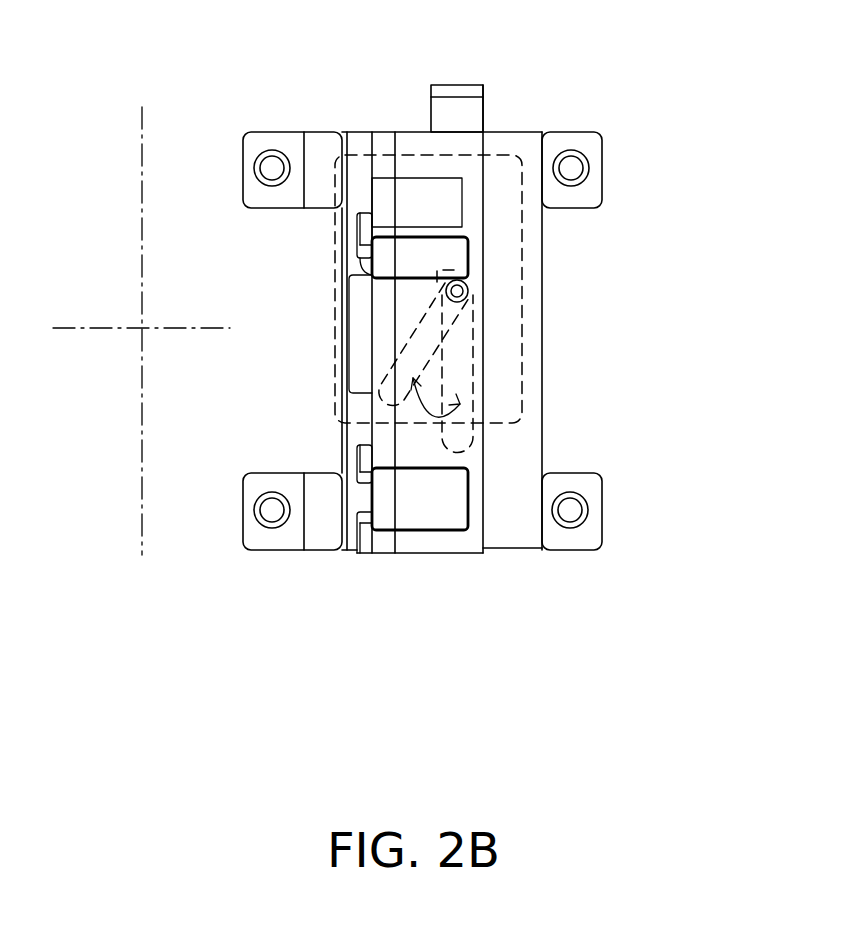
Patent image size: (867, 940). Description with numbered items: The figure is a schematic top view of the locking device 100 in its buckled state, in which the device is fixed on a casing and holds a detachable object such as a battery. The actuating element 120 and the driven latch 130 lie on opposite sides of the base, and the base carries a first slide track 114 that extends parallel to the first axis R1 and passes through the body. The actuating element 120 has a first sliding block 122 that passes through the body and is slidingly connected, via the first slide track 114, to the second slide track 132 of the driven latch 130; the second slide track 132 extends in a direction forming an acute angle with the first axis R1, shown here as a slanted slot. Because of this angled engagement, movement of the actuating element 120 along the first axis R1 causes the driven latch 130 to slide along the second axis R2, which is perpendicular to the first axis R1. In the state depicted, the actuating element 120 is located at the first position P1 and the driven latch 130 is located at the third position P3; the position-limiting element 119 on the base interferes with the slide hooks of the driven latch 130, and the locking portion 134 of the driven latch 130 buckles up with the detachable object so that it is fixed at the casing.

The locking device 100 is at (369, 350).
The first slide track 114 is at (462, 400).
The position-limiting element 119 is at (347, 542).
The actuating element 120 is at (523, 226).
The first sliding block 122 is at (468, 292).
The driven latch 130 is at (410, 137).
The second slide track 132 is at (446, 370).
The locking portion 134 is at (470, 113).
The first position P1 is at (362, 152).
The third position P3 is at (427, 553).
The first axis R1 is at (141, 313).
The second axis R2 is at (125, 333).